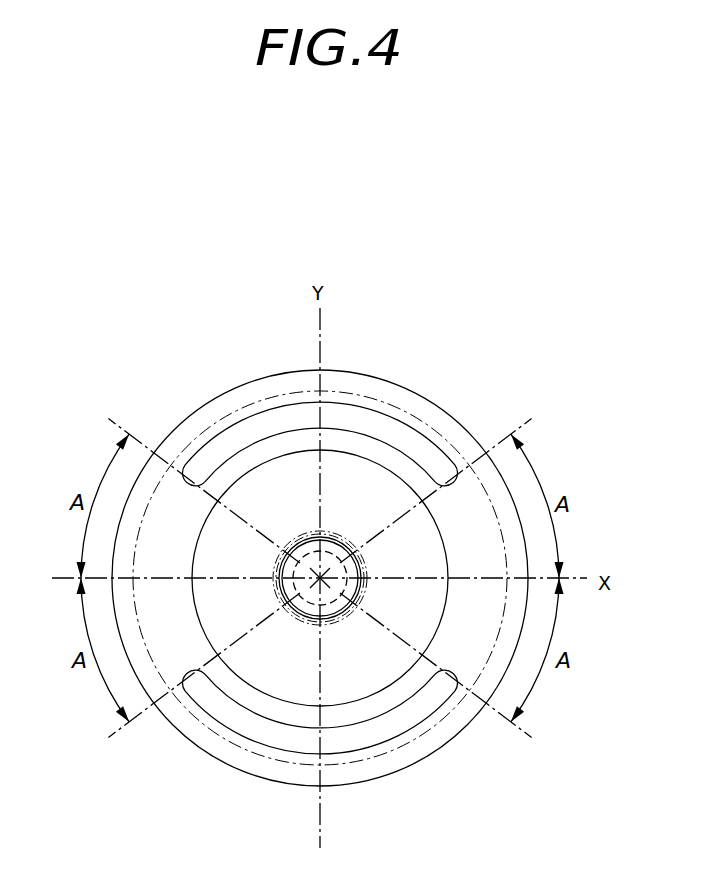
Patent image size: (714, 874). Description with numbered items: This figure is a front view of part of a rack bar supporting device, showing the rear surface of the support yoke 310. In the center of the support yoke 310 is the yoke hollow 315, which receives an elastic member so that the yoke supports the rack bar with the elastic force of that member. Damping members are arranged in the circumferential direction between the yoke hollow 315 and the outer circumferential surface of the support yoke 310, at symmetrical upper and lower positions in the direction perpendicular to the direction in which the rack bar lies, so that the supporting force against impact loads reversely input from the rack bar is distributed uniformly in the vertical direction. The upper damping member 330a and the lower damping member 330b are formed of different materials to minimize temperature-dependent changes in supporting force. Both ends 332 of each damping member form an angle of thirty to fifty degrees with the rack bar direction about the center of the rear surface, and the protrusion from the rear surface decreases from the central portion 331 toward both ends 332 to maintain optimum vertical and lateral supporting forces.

The support yoke 310 is at (86, 257).
The yoke hollow 315 is at (287, 665).
The damping member provided at the upper portion 330a is at (415, 448).
The damping member provided at the lower portion 330b is at (397, 718).
The central portion of the damping member 331 is at (324, 418).
The both ends of the damping member 332 is at (466, 488).